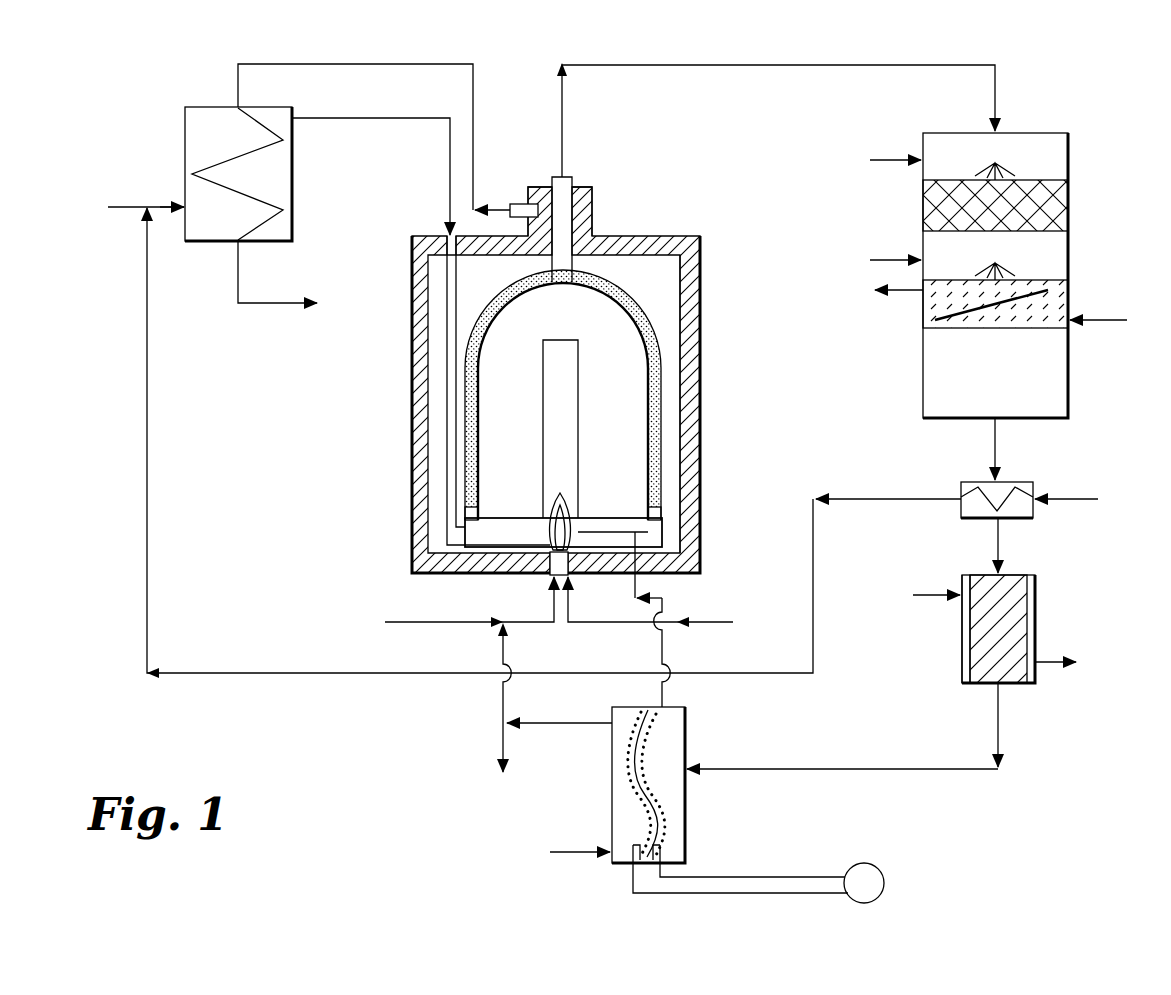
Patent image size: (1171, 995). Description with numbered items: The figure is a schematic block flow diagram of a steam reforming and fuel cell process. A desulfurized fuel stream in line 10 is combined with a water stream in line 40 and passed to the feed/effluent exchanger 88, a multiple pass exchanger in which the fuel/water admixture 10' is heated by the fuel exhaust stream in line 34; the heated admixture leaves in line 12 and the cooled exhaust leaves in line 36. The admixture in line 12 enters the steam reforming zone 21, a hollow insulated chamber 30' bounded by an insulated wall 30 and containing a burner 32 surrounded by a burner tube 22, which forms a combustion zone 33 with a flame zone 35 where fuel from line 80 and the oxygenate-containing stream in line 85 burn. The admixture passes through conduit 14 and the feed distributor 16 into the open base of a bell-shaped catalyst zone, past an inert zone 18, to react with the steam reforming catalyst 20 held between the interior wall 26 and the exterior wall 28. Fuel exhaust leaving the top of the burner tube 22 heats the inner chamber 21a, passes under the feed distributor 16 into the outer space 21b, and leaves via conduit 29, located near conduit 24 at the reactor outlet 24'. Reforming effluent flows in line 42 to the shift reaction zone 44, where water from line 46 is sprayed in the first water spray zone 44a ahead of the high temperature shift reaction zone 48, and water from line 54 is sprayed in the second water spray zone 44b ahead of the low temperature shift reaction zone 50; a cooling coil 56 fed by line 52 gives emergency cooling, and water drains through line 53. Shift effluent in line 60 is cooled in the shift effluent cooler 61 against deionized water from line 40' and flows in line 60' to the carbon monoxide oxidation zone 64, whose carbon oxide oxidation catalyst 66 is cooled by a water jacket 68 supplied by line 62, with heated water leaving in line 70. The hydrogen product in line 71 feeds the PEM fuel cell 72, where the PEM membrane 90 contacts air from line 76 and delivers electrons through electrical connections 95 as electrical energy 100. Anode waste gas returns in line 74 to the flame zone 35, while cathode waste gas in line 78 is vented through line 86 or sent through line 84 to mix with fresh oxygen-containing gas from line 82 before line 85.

The desulfurized fuel stream line 10 is at (132, 227).
The fuel/water admixture 10' is at (158, 185).
The fuel/water admixture line 12 is at (390, 118).
The conduit 14 is at (447, 385).
The feed distributor 16 is at (655, 535).
The inert zone 18 is at (660, 513).
The steam reforming catalyst 20 is at (662, 430).
The steam reforming zone 21 is at (409, 470).
The inner chamber 21a is at (524, 396).
The outer space 21b is at (667, 291).
The burner tube 22 is at (579, 385).
The conduit 24 is at (578, 206).
The reactor outlet 24' is at (589, 206).
The interior wall 26 is at (470, 450).
The exterior wall 28 is at (515, 292).
The conduit 29 is at (520, 204).
The insulated wall 30 is at (723, 404).
The hollow insulated chamber 30' is at (715, 404).
The burner 32 is at (568, 568).
The combustion zone 33 is at (567, 491).
The fuel exhaust stream line 34 is at (352, 64).
The flame zone 35 is at (554, 510).
The cooled fuel exhaust line 36 is at (292, 303).
The water stream line 40 is at (529, 459).
The deionized water stream line 40' is at (1077, 480).
The reforming reactor effluent line 42 is at (733, 66).
The shift reaction zone 44 is at (1072, 160).
The first water spray zone 44a is at (1042, 145).
The second water spray zone 44b is at (1045, 243).
The second water stream line 46 is at (898, 160).
The high temperature shift reaction zone 48 is at (1068, 205).
The low temperature shift reaction zone 50 is at (1068, 292).
The fourth water stream line 52 is at (1097, 322).
The fifth water stream line 53 is at (907, 291).
The third water stream line 54 is at (897, 260).
The cooling coil 56 is at (993, 322).
The low temperature shift effluent line 60 is at (1021, 449).
The oxidation zone feedstream line 60' is at (968, 545).
The shift effluent cooler 61 is at (1034, 512).
The cooling water stream line 62 is at (930, 595).
The carbon monoxide oxidation zone 64 is at (1040, 591).
The carbon oxide oxidation catalyst 66 is at (1013, 615).
The water jacket 68 is at (965, 640).
The heated water stream line 70 is at (1058, 663).
The hydrogen product stream line 71 is at (998, 740).
The PEM fuel cell 72 is at (688, 817).
The anode waste gas stream line 74 is at (663, 598).
The oxygen-containing stream line 76 is at (582, 852).
The cathode waste gas stream line 78 is at (590, 723).
The fuel stream line 80 is at (635, 622).
The fresh oxygen-containing stream line 82 is at (438, 622).
The cathode waste gas line 84 is at (505, 656).
The oxygenate-containing stream line 85 is at (538, 622).
The vent line 86 is at (503, 750).
The feed/effluent exchanger 88 is at (294, 193).
The PEM membrane 90 is at (662, 738).
The electrical connections 95 is at (743, 877).
The electrical energy 100 is at (884, 882).